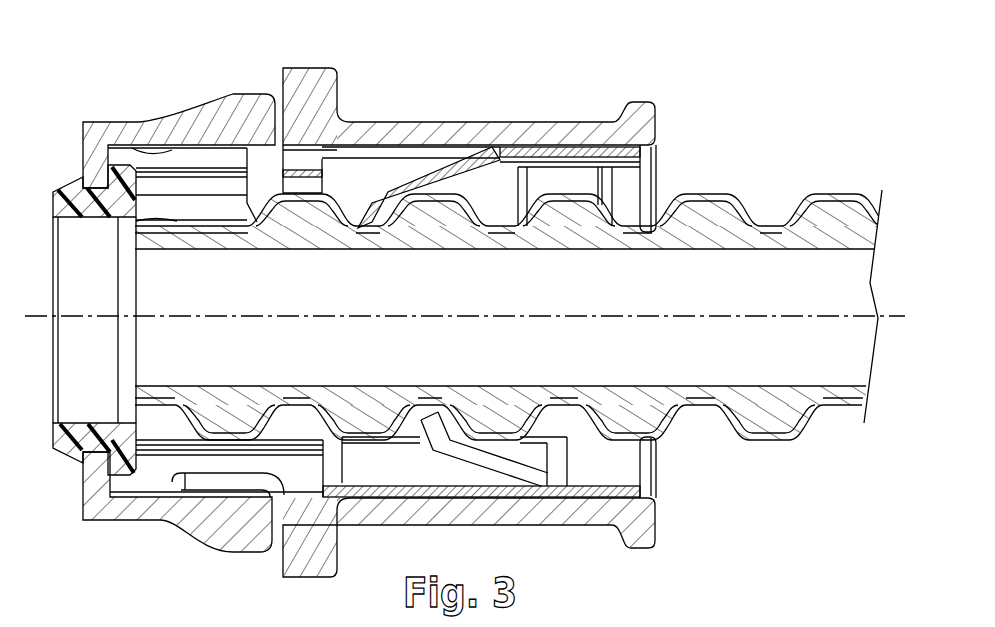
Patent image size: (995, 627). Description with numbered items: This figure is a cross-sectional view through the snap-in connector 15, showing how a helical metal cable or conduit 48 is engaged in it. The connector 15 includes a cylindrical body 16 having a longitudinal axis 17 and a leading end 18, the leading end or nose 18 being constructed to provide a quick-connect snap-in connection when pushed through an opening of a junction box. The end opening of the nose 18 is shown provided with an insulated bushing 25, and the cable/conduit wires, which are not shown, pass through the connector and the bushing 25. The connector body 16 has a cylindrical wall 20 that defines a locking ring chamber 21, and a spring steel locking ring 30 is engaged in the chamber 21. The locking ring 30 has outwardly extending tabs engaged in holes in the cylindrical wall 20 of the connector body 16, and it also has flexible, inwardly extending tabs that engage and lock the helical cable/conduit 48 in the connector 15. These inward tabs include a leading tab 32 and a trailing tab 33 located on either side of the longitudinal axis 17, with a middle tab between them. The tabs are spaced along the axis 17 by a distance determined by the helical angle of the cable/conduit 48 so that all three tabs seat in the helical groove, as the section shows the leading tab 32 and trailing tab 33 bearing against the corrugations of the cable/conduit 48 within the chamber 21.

The snap-in connector 15 is at (439, 68).
The cylindrical body 16 is at (517, 122).
The longitudinal axis 17 is at (83, 314).
The leading end 18 is at (138, 122).
The cylindrical wall 20 is at (320, 150).
The locking ring chamber 21 is at (354, 178).
The insulated bushing 25 is at (50, 192).
The locking ring 30 is at (388, 497).
The leading tab 32 is at (507, 455).
The trailing tab 33 is at (441, 170).
The helical metal cable or conduit 48 is at (767, 413).